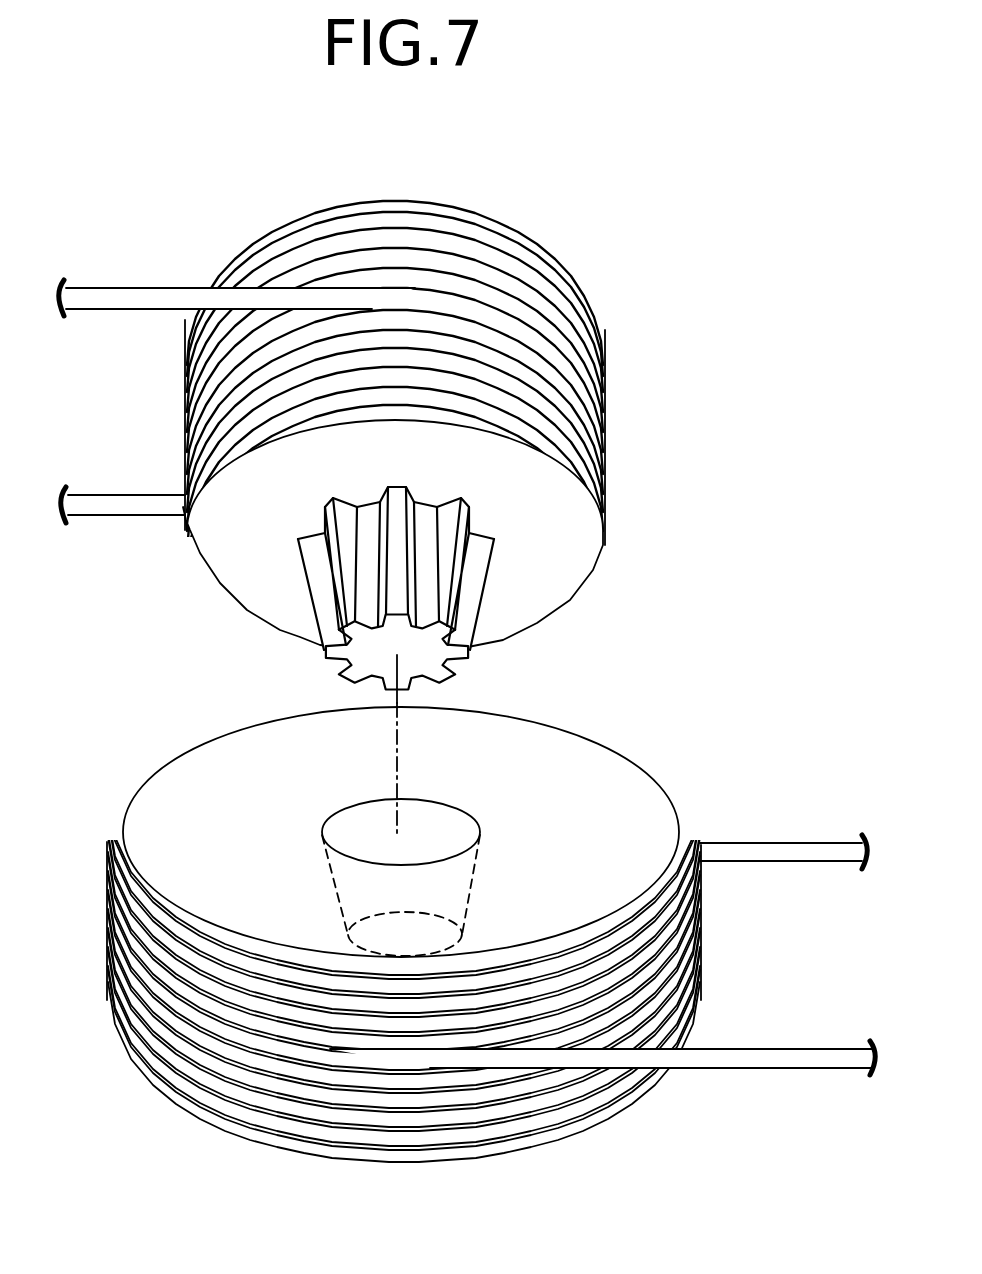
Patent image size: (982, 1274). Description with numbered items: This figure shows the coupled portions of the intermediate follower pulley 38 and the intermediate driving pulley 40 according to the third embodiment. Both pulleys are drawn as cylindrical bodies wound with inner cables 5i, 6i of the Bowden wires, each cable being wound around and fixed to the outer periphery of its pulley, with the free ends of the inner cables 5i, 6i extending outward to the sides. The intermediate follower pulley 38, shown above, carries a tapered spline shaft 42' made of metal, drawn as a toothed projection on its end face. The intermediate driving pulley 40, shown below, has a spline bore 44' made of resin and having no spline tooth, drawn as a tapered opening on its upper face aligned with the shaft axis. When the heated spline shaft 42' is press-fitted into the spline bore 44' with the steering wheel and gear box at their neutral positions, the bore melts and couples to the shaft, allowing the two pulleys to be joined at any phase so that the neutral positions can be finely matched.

The inner cable 5i is at (133, 297).
The inner cable 6i is at (152, 508).
The intermediate follower pulley 38 is at (548, 543).
The intermediate driving pulley 40 is at (615, 820).
The tapered spline shaft 42' is at (467, 595).
The spline bore 44' is at (441, 829).